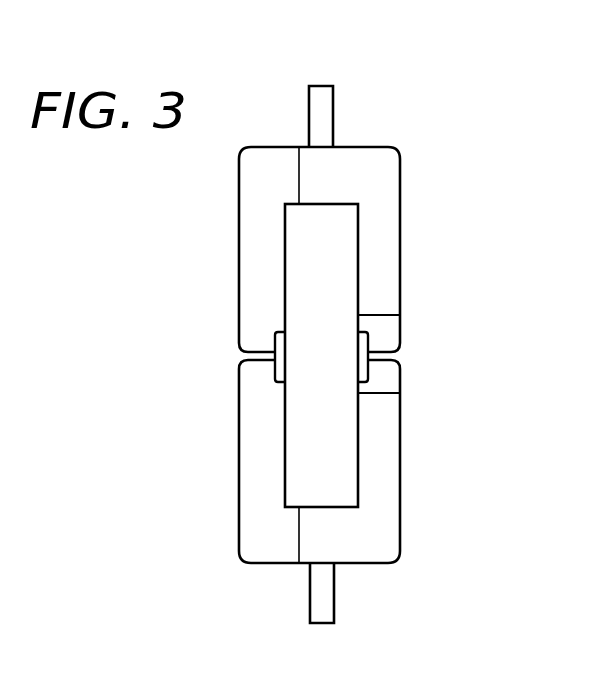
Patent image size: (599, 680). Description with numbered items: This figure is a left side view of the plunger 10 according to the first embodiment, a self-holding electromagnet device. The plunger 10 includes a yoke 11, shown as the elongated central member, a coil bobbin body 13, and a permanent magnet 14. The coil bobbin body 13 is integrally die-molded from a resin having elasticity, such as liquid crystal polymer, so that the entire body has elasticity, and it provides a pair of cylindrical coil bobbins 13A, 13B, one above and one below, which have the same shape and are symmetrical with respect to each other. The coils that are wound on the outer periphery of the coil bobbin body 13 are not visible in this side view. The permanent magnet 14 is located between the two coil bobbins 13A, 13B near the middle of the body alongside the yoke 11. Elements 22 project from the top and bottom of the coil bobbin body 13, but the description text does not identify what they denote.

The plunger 10 is at (276, 90).
The yoke 11 is at (345, 475).
The coil bobbin body 13 is at (393, 432).
The coil bobbin 13A is at (388, 243).
The coil bobbin 13B is at (393, 535).
The permanent magnet 14 is at (362, 372).
The lead terminal 22 is at (323, 107).